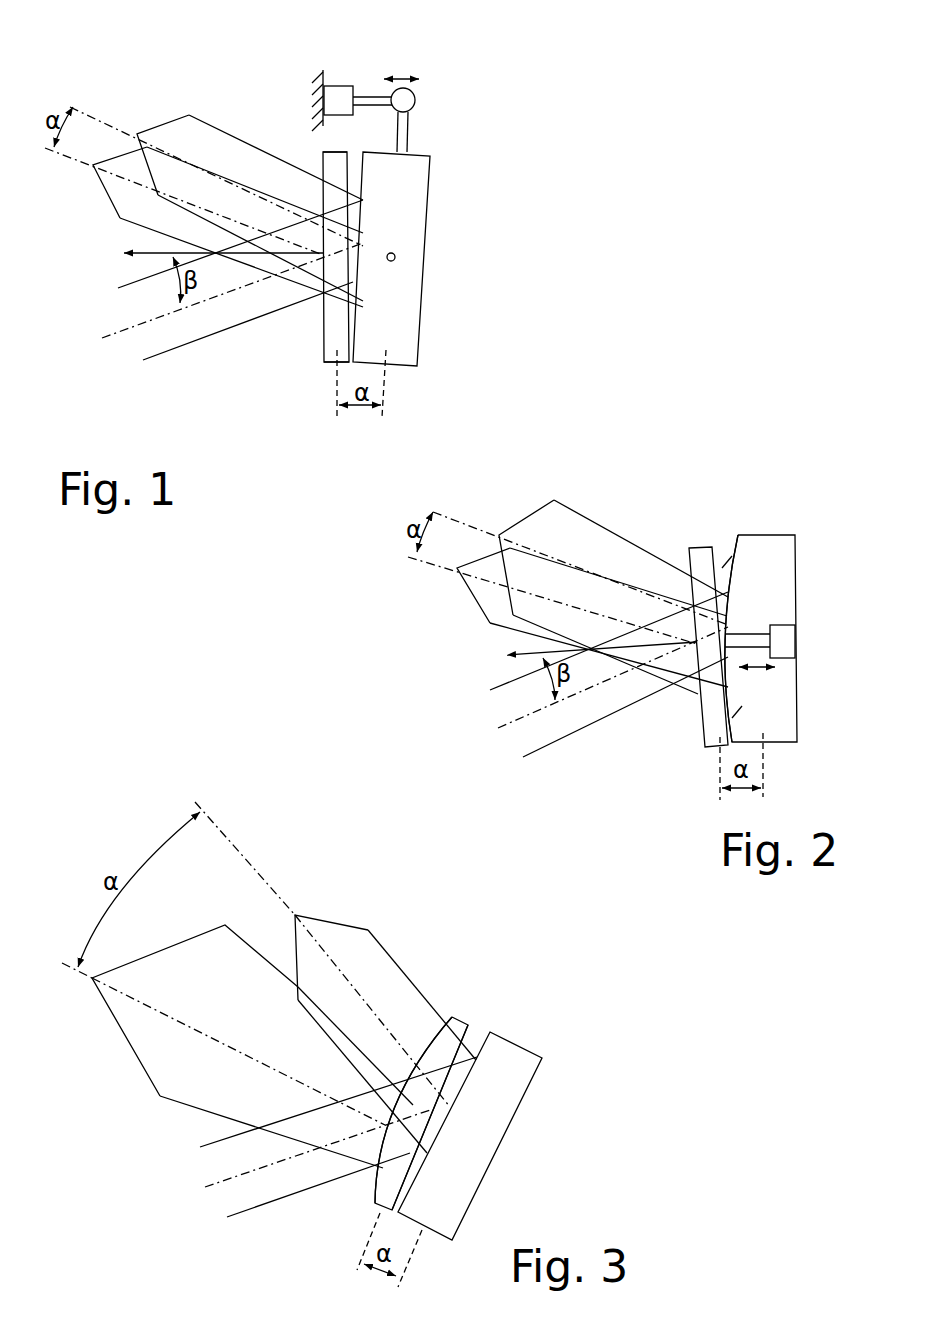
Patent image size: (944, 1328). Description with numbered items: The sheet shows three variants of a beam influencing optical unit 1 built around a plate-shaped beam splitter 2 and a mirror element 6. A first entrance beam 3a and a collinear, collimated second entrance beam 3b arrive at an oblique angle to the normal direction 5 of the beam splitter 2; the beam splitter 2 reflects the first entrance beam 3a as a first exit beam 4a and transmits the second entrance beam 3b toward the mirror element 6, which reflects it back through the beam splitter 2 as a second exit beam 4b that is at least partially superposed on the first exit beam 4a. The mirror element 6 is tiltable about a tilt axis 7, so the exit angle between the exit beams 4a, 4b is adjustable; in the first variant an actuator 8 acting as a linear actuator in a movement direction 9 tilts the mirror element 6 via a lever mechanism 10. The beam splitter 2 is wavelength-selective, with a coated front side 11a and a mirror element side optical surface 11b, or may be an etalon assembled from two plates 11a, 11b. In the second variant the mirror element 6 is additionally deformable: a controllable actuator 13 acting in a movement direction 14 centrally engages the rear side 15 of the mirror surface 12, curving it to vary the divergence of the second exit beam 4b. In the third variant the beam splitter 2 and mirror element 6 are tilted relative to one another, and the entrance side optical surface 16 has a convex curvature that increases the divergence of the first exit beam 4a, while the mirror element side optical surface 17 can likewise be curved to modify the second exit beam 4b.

In FIG. 1, the beam influencing optical unit 1 is at (170, 92).
In FIG. 2, the beam influencing optical unit 1 is at (729, 445).
In FIG. 3, the beam influencing optical unit 1 is at (414, 874).
In FIG. 1, the beam splitter 2 is at (330, 330).
In FIG. 2, the beam splitter 2 is at (708, 717).
In FIG. 3, the beam splitter 2 is at (462, 1022).
In FIG. 1, the first entrance beam 3a is at (177, 330).
In FIG. 2, the first entrance beam 3a is at (553, 725).
In FIG. 3, the first entrance beam 3a is at (238, 1187).
In FIG. 1, the second collimated entrance beam 3b is at (177, 330).
In FIG. 2, the second collimated entrance beam 3b is at (553, 725).
In FIG. 3, the second collimated entrance beam 3b is at (238, 1187).
In FIG. 1, the first exit beam 4a is at (137, 208).
In FIG. 2, the first exit beam 4a is at (497, 603).
In FIG. 3, the first exit beam 4a is at (172, 1043).
In FIG. 1, the second exit beam 4b is at (208, 143).
In FIG. 2, the second exit beam 4b is at (585, 532).
In FIG. 3, the second exit beam 4b is at (327, 957).
In FIG. 1, the normal direction 5 is at (147, 250).
In FIG. 2, the normal direction 5 is at (533, 653).
In FIG. 1, the mirror element 6 is at (402, 350).
In FIG. 2, the mirror element 6 is at (783, 577).
In FIG. 3, the mirror element 6 is at (510, 1063).
In FIG. 1, the tilt axis 7 is at (395, 260).
In FIG. 1, the actuator 8 is at (343, 97).
In FIG. 1, the movement direction 9 is at (405, 78).
In FIG. 1, the lever mechanism 10 is at (405, 128).
In FIG. 1, the front side 11a is at (321, 356).
In FIG. 1, the mirror element side optical surface 11b is at (350, 170).
In FIG. 2, the mirror surface 12 is at (735, 558).
In FIG. 2, the controllable actuator 13 is at (780, 638).
In FIG. 2, the movement direction 14 is at (783, 677).
In FIG. 2, the rear side 15 is at (735, 715).
In FIG. 3, the entrance side optical surface 16 is at (373, 1185).
In FIG. 3, the mirror element side optical surface 17 is at (468, 1033).